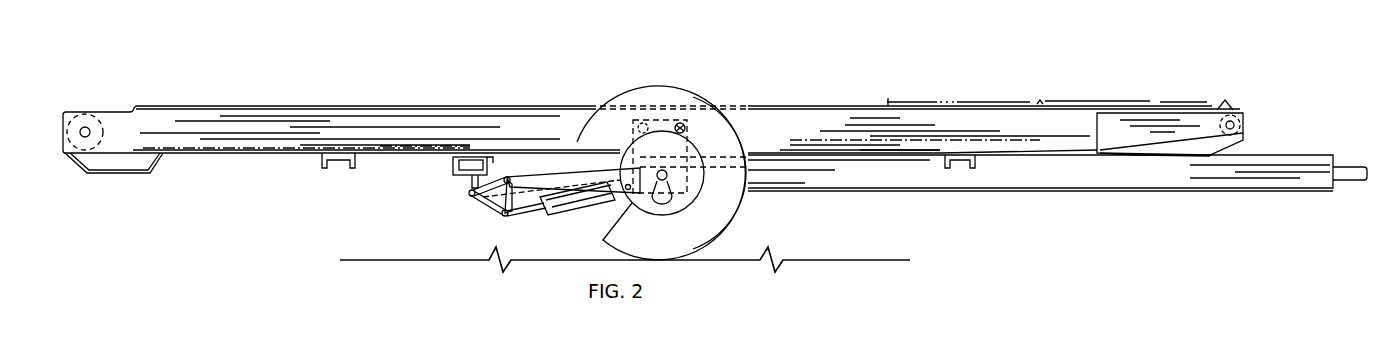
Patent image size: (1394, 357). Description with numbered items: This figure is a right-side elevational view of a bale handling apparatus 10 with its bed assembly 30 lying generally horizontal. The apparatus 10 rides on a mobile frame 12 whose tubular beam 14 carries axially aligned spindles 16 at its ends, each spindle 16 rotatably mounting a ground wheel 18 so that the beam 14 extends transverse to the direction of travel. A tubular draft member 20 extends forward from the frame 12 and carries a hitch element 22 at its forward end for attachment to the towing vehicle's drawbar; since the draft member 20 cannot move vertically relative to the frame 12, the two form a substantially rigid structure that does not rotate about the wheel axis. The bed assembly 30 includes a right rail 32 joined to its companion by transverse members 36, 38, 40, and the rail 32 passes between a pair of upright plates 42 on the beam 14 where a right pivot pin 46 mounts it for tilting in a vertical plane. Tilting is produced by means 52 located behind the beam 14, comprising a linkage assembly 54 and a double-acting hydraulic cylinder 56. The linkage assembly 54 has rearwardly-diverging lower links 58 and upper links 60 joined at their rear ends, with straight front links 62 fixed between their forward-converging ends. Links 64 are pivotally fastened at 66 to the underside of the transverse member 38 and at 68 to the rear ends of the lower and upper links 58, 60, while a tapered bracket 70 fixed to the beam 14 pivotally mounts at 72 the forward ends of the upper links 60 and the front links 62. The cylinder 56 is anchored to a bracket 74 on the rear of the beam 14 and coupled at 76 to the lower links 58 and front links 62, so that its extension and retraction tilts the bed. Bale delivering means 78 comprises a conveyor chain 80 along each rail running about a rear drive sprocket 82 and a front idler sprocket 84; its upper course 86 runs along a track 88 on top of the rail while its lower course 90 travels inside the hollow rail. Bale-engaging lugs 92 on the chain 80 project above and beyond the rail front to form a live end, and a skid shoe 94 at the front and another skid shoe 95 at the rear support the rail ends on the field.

The apparatus 10 is at (535, 58).
The mobile frame 12 is at (714, 92).
The beam 14 is at (690, 178).
The spindles 16 is at (687, 210).
The ground wheel 18 is at (733, 226).
The draft member 20 is at (1086, 190).
The hitch element 22 is at (1352, 167).
The bed assembly 30 is at (396, 162).
The right rail 32 is at (282, 154).
The transverse member 36 is at (975, 165).
The transverse member 38 is at (453, 167).
The transverse member 40 is at (350, 169).
The upright plates 42 is at (686, 135).
The right pivot pin 46 is at (684, 128).
The means for actuating pivotal tilting 52 is at (472, 235).
The linkage assembly 54 is at (506, 230).
The hydraulic cylinder 56 is at (600, 208).
The lower links 58 is at (487, 208).
The upper links 60 is at (488, 181).
The straight front links 62 is at (519, 196).
The links 64 is at (469, 194).
The pivotal fastening 66 is at (494, 157).
The pivotal fastening 68 is at (474, 207).
The tapered bracket 70 is at (610, 176).
The pivot 72 is at (515, 182).
The bracket 74 is at (649, 198).
The pivotal coupling 76 is at (517, 213).
The bale delivering means 78 is at (1105, 102).
The conveyor chain 80 is at (1063, 99).
The rear drive sprocket 82 is at (100, 133).
The front idler sprocket 84 is at (1244, 131).
The upper course 86 is at (895, 103).
The track 88 is at (975, 103).
The lower course 90 is at (422, 146).
The bale-engaging lug 92 is at (1225, 100).
The skid shoe 94 is at (1133, 153).
The skid shoe 95 is at (148, 176).